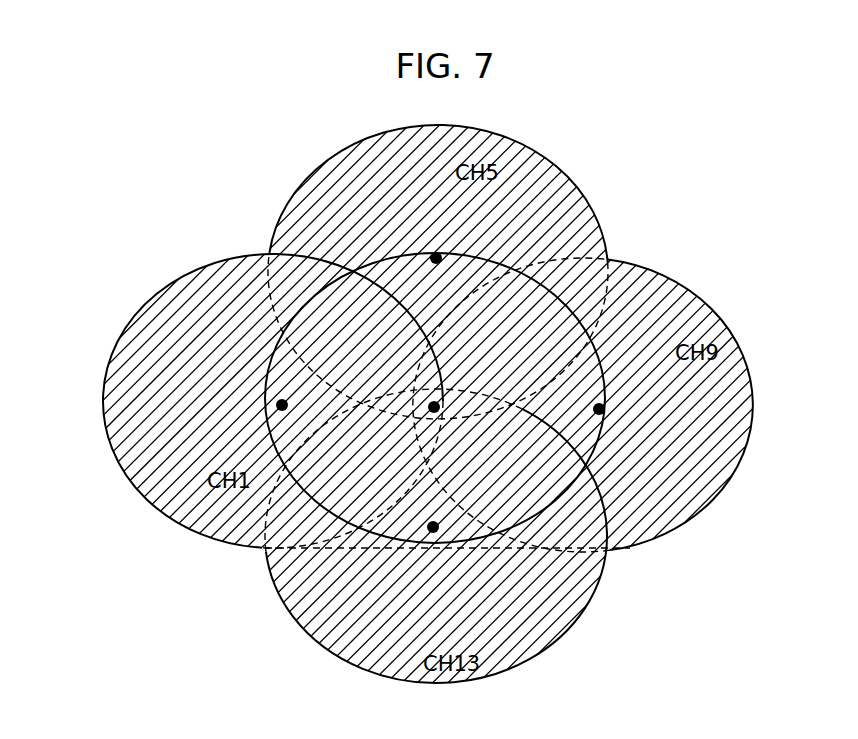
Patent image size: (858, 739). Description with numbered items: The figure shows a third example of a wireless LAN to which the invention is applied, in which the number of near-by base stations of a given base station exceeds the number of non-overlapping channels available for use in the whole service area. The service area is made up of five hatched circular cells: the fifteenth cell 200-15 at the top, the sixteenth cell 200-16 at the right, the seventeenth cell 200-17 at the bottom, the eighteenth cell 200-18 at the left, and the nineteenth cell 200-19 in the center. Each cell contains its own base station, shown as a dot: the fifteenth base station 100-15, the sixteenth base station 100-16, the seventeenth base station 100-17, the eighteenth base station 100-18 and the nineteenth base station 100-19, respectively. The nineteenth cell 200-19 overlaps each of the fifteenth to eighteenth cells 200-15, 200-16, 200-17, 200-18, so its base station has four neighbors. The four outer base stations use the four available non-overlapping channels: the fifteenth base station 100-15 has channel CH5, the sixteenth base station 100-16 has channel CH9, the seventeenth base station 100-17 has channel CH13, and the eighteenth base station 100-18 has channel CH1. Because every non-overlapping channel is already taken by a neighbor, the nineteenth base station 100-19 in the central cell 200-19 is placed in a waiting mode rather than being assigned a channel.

The fifteenth base station 100-15 is at (440, 257).
The sixteenth base station 100-16 is at (603, 406).
The seventeenth base station 100-17 is at (435, 530).
The eighteenth base station 100-18 is at (282, 402).
The nineteenth base station 100-19 is at (437, 410).
The fifteenth cell 200-15 is at (560, 164).
The sixteenth cell 200-16 is at (712, 500).
The seventeenth cell 200-17 is at (577, 613).
The eighteenth cell 200-18 is at (146, 498).
The nineteenth cell 200-19 is at (625, 265).